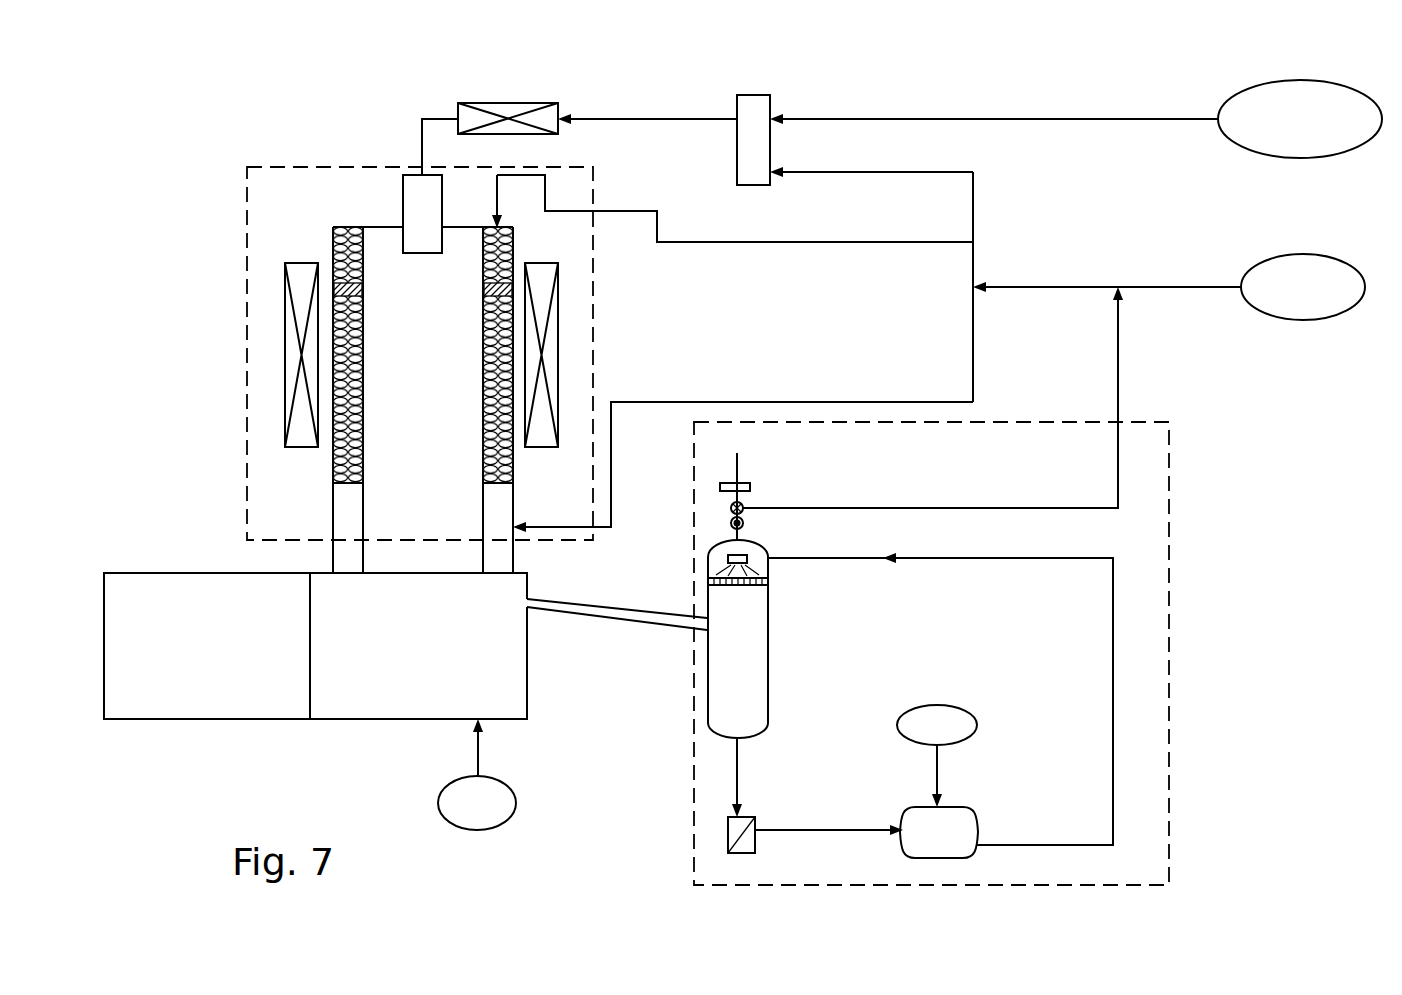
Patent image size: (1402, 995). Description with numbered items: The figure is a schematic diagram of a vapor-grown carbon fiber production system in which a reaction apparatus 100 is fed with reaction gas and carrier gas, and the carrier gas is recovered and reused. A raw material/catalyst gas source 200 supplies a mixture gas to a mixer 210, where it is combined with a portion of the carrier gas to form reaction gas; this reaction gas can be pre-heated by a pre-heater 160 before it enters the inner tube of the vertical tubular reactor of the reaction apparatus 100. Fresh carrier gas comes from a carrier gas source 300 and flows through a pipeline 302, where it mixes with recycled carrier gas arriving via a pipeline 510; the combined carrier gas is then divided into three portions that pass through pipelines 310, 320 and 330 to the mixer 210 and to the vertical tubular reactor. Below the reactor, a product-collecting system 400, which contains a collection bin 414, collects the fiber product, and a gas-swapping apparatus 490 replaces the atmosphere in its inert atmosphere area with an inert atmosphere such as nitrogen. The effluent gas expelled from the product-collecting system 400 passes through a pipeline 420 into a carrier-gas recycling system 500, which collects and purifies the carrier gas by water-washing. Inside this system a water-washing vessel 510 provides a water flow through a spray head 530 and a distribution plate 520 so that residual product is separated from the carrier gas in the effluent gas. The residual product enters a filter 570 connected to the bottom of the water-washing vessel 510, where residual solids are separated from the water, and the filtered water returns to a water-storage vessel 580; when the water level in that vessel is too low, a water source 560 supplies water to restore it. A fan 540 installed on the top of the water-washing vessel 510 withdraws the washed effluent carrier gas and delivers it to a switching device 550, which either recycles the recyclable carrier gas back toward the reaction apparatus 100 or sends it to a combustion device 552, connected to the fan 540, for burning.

The reaction apparatus 100 is at (268, 128).
The pre-heater 160 is at (520, 110).
The mixer 210 is at (752, 103).
The raw material/catalyst gas source 200 is at (1322, 80).
The carrier gas source 300 is at (1322, 258).
The pipeline 302 is at (1048, 285).
The pipeline 310 is at (927, 173).
The pipeline 320 is at (795, 243).
The pipeline 330 is at (793, 400).
The product-collecting system 400 is at (174, 552).
The bin 414 is at (451, 656).
The pipeline 420 is at (625, 622).
The gas-swapping apparatus 490 is at (513, 815).
The carrier-gas recycling system 500 is at (1180, 710).
The water-washing vessel 510 is at (1118, 361).
The distribution plate 520 is at (710, 580).
The spray head 530 is at (728, 559).
The fan 540 is at (747, 527).
The switching device 550 is at (742, 503).
The combustion device 552 is at (728, 492).
The water source 560 is at (957, 708).
The filter 570 is at (752, 835).
The water-storage vessel 580 is at (968, 817).